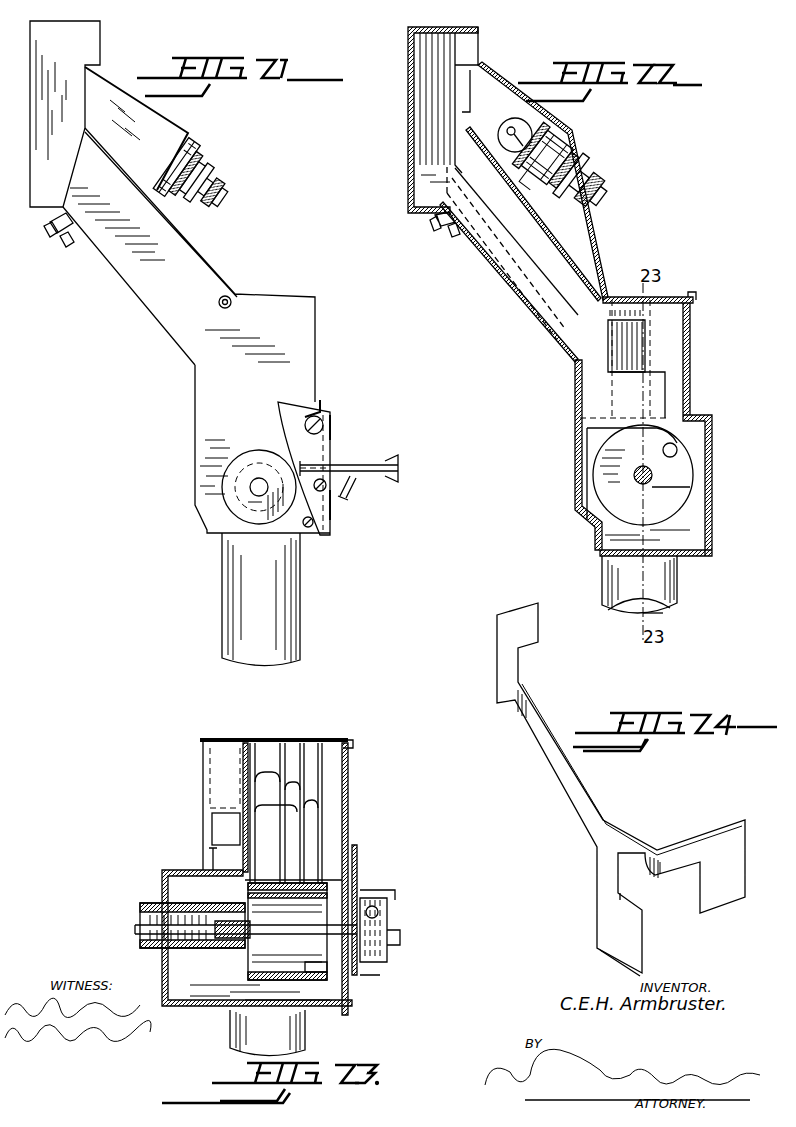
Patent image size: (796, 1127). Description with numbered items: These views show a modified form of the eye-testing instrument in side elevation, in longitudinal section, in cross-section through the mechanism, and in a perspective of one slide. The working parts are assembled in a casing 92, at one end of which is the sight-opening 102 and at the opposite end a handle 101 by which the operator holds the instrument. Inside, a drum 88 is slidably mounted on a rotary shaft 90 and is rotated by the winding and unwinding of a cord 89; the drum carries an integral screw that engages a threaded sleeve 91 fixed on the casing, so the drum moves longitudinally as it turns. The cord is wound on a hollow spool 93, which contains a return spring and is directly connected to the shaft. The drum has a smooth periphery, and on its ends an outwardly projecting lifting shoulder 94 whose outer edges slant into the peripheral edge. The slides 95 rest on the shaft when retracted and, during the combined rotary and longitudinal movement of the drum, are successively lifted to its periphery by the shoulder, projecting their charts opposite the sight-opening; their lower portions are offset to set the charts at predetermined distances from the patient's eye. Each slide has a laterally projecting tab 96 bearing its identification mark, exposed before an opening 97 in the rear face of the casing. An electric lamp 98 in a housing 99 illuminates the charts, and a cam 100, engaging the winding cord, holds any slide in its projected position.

In FIG. 22, the drum 88 is at (672, 468).
In FIG. 23, the drum 88 is at (313, 980).
In FIG. 21, the cord 89 is at (398, 466).
In FIG. 23, the cord 89 is at (368, 958).
In FIG. 22, the rotary shaft 90 is at (700, 483).
In FIG. 23, the rotary shaft 90 is at (140, 932).
In FIG. 23, the threaded sleeve 91 is at (182, 900).
In FIG. 21, the casing 92 is at (195, 462).
In FIG. 22, the casing 92 is at (573, 477).
In FIG. 23, the casing 92 is at (178, 872).
In FIG. 23, the hollow spool 93 is at (385, 917).
In FIG. 22, the lifting shoulder 94 is at (687, 450).
In FIG. 23, the lifting shoulder 94 is at (307, 960).
In FIG. 22, the slides 95 is at (548, 258).
In FIG. 23, the slides 95 is at (300, 830).
In FIG. 24, the slides 95 is at (563, 795).
In FIG. 22, the laterally projecting tabs 96 is at (643, 343).
In FIG. 23, the laterally projecting tabs 96 is at (208, 818).
In FIG. 23, the opening 97 is at (217, 855).
In FIG. 22, the electric lamp 98 is at (528, 120).
In FIG. 21, the housing 99 is at (188, 130).
In FIG. 22, the housing 99 is at (574, 133).
In FIG. 21, the cam 100 is at (340, 497).
In FIG. 21, the handle 101 is at (302, 577).
In FIG. 22, the handle 101 is at (602, 582).
In FIG. 23, the handle 101 is at (230, 1032).
In FIG. 21, the sight-opening 102 is at (101, 43).
In FIG. 22, the sight-opening 102 is at (479, 43).